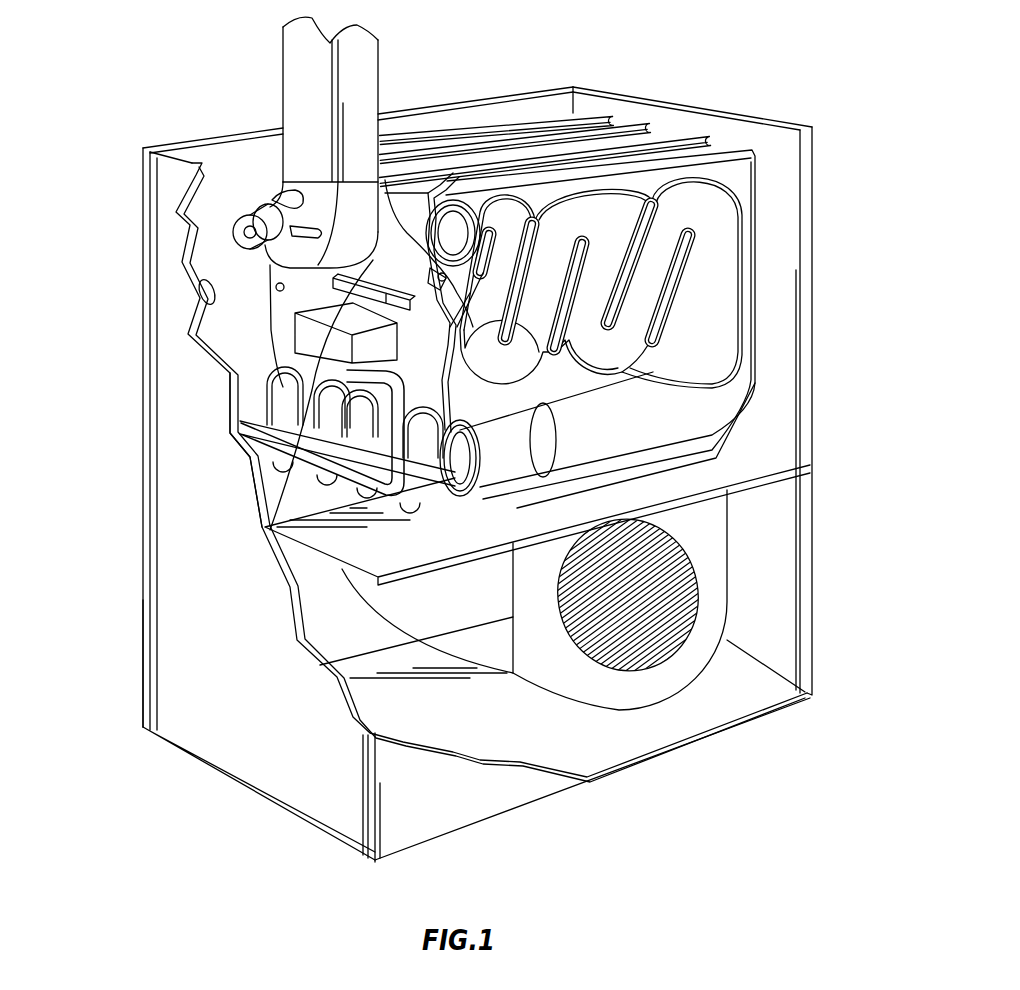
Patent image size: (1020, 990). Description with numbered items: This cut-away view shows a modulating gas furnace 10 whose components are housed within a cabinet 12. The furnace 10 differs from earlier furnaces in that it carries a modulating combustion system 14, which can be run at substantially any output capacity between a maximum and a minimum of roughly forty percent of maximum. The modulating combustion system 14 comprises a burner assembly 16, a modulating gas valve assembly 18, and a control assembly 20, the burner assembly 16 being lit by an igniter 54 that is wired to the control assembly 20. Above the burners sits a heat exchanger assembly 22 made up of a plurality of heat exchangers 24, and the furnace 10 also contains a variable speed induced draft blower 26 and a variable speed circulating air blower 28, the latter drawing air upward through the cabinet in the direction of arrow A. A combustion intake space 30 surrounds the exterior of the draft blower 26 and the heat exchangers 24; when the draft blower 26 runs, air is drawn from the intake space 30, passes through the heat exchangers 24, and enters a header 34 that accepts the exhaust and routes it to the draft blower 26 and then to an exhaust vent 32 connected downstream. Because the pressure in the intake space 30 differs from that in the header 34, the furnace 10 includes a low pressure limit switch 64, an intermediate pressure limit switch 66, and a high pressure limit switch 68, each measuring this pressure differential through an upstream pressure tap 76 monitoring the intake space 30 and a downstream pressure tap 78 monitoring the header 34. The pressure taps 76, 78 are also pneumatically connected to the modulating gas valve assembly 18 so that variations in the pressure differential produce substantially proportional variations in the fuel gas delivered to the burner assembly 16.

The modulating gas furnace 10 is at (826, 338).
The cabinet 12 is at (283, 770).
The modulating combustion system 14 is at (123, 705).
The burner assembly 16 is at (258, 475).
The modulating gas valve assembly 18 is at (267, 527).
The control assembly 20 is at (333, 350).
The heat exchanger assembly 22 is at (513, 113).
The heat exchangers 24 is at (727, 153).
The variable speed induced draft blower 26 is at (258, 190).
The variable speed circulating air blower 28 is at (665, 675).
The combustion intake space 30 is at (233, 270).
The exhaust vent 32 is at (295, 65).
The header 34 is at (417, 197).
The igniter 54 is at (452, 492).
The low pressure limit switch 64 is at (378, 274).
The intermediate pressure limit switch 66 is at (353, 297).
The high pressure limit switch 68 is at (343, 330).
The upstream pressure tap 76 is at (276, 285).
The downstream pressure tap 78 is at (385, 180).
The air flow direction A is at (706, 553).